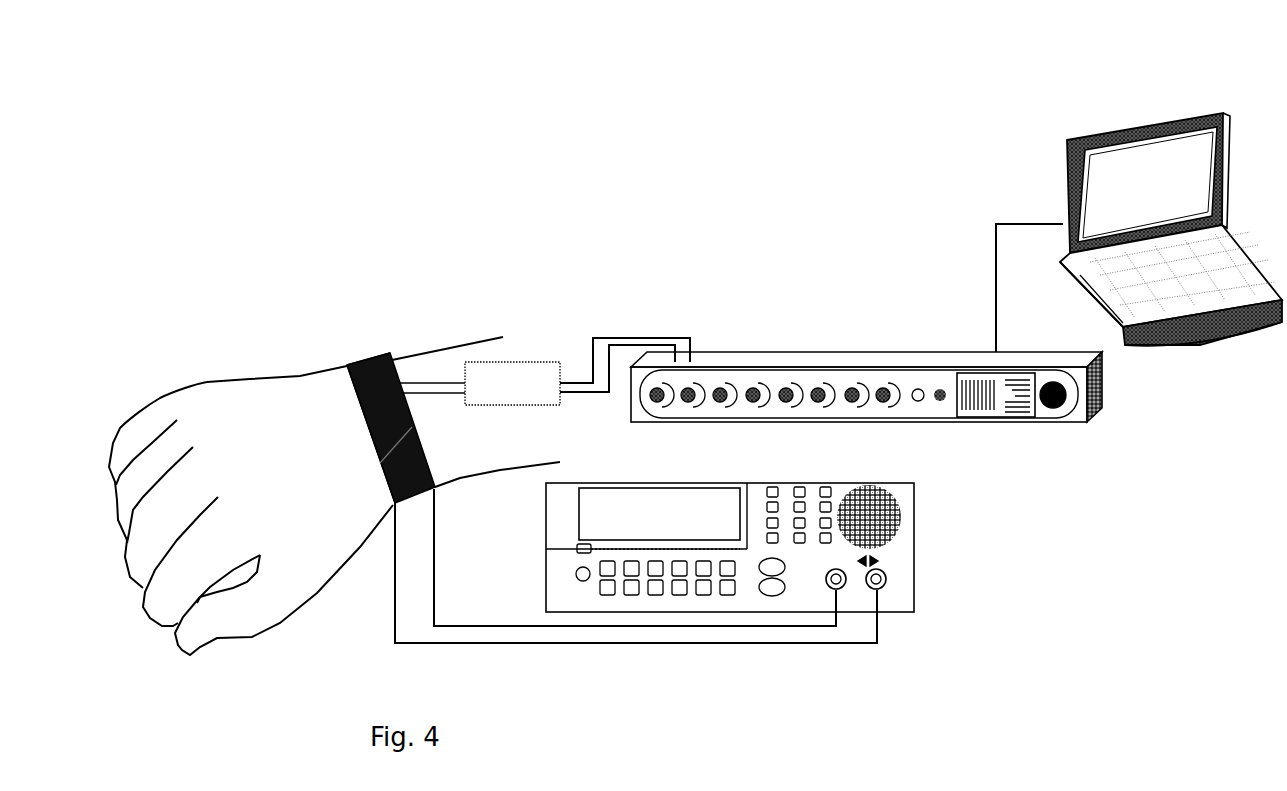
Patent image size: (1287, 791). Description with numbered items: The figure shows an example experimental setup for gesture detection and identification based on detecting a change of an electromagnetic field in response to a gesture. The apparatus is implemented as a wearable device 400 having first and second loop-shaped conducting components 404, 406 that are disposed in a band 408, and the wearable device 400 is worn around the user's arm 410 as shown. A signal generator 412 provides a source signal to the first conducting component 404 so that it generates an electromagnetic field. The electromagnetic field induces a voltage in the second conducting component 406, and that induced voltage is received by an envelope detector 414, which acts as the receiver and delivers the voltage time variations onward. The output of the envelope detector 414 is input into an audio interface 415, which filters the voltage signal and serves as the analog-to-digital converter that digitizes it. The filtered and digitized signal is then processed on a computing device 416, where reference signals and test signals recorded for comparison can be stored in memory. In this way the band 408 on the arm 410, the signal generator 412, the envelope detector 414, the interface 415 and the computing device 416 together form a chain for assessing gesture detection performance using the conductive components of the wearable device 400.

The wearable device 400 is at (400, 362).
The first loop-shaped conducting component 404 is at (347, 373).
The second loop-shaped conducting component 406 is at (387, 355).
The band 408 is at (412, 427).
The user's arm 410 is at (327, 518).
The signal generator 412 is at (890, 581).
The envelope detector 414 is at (512, 383).
The interface 415 is at (827, 360).
The computing device 416 is at (1115, 128).